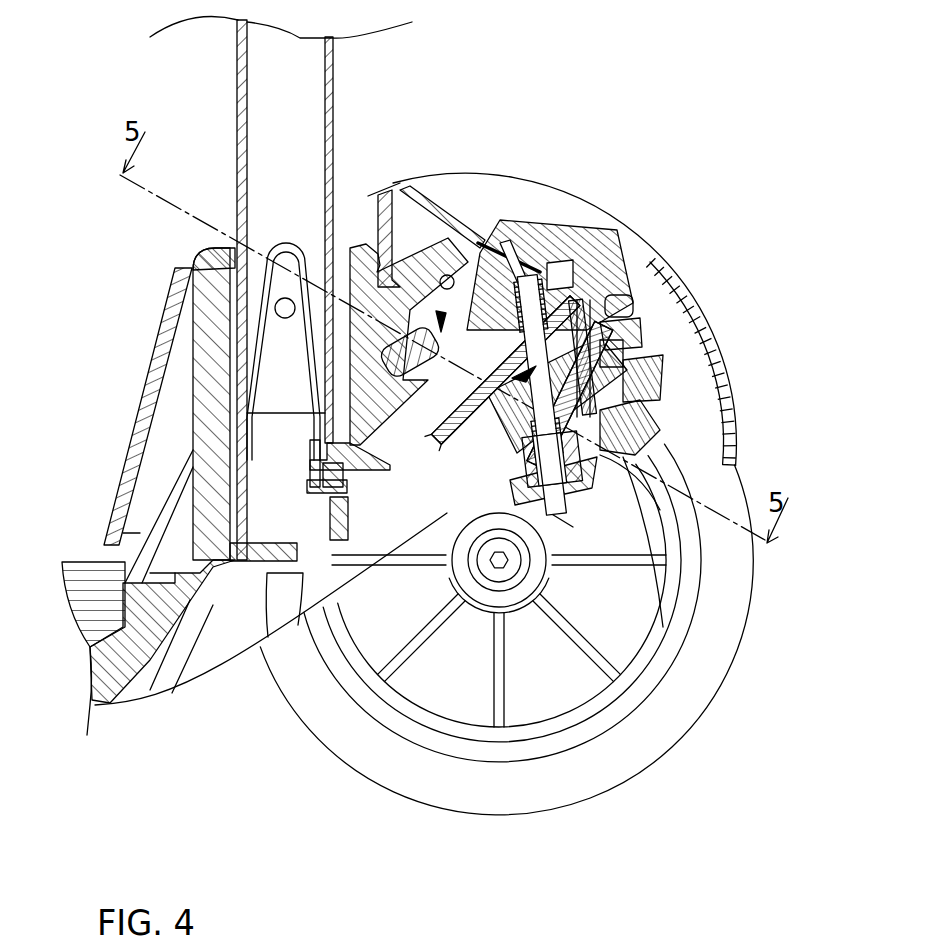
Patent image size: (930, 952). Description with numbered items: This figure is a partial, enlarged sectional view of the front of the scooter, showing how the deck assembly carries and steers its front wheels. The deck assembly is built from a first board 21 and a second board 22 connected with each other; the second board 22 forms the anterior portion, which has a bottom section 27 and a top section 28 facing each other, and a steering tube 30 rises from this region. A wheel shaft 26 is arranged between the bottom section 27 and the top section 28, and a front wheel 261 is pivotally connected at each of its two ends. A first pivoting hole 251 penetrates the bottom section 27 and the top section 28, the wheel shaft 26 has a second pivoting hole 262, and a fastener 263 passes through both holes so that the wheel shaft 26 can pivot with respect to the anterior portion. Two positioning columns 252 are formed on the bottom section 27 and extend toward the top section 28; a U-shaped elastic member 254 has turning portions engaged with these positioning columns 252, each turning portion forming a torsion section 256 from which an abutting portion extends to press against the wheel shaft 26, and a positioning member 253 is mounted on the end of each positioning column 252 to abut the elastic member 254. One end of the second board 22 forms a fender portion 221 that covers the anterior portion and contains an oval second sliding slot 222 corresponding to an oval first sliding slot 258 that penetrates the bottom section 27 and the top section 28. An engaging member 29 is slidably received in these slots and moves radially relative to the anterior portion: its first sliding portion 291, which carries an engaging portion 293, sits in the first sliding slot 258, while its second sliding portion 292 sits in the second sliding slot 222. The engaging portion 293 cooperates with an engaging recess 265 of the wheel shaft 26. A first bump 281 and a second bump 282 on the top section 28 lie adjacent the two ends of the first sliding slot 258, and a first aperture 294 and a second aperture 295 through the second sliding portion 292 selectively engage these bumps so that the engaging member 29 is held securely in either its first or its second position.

The first board 21 is at (120, 688).
The second board 22 is at (90, 567).
The wheel shaft 26 is at (580, 463).
The bottom section 27 is at (560, 540).
The top section 28 is at (625, 400).
The engaging member 29 is at (556, 245).
The steering tube 30 is at (240, 128).
The fender portion 221 is at (650, 335).
The second sliding slot 222 is at (484, 238).
The first pivoting hole 251 is at (600, 398).
The positioning column 252 is at (195, 278).
The positioning member 253 is at (350, 262).
The elastic member 254 is at (437, 233).
The torsion section 256 is at (235, 252).
The first sliding slot 258 is at (230, 327).
The front wheel 261 is at (680, 727).
The second pivoting hole 262 is at (607, 450).
The fastener 263 is at (645, 320).
The engaging recess 265 is at (600, 468).
The first bump 281 is at (592, 278).
The second bump 282 is at (447, 274).
The first sliding portion 291 is at (462, 318).
The second sliding portion 292 is at (604, 320).
The engaging portion 293 is at (590, 305).
The first aperture 294 is at (565, 280).
The second aperture 295 is at (513, 262).